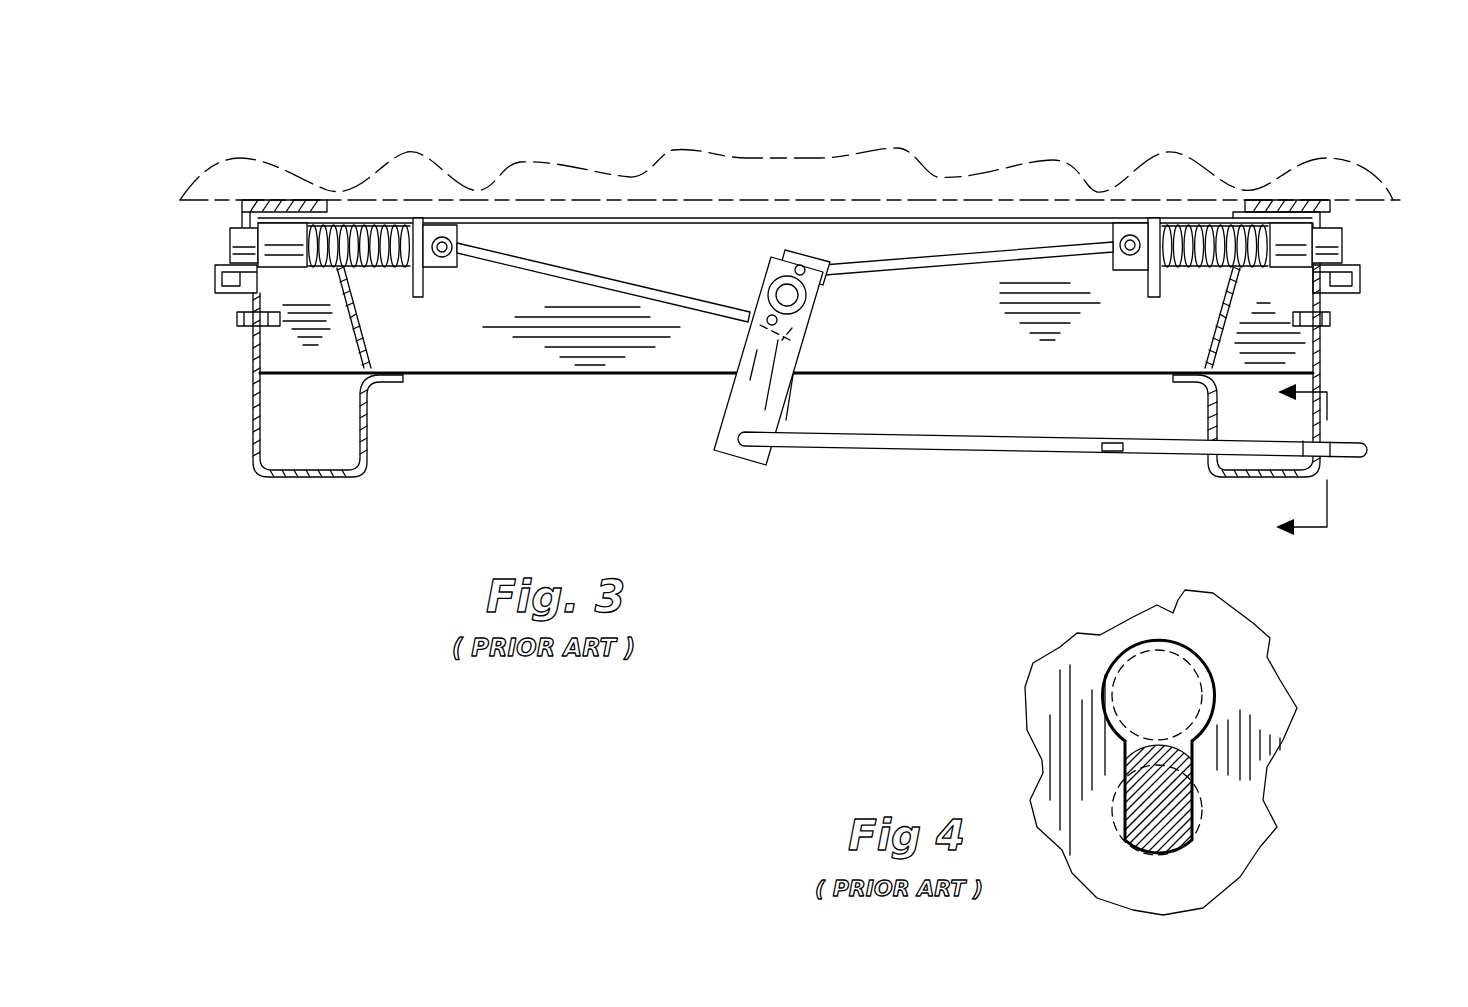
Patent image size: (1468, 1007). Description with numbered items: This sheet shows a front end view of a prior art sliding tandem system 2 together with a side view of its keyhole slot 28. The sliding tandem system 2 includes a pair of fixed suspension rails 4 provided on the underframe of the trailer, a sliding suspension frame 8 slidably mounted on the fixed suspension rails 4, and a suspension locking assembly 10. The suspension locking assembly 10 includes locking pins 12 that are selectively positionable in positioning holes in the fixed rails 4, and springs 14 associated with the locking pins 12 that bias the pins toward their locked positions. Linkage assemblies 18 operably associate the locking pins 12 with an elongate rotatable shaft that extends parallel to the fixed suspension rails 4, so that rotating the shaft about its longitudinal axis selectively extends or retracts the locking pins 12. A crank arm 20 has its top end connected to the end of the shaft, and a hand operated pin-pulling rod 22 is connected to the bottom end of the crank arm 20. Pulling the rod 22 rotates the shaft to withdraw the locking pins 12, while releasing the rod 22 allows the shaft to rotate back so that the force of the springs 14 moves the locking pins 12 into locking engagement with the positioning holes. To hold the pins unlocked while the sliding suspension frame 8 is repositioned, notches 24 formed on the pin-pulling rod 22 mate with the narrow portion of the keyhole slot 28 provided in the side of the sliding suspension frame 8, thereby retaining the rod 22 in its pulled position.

In FIG. 3, the sliding tandem system 2 is at (983, 157).
In FIG. 3, the fixed suspension rails 4 is at (287, 200).
In FIG. 3, the sliding suspension frame 8 is at (603, 352).
In FIG. 3, the suspension locking assembly 10 is at (713, 466).
In FIG. 3, the locking pins 12 is at (237, 240).
In FIG. 3, the springs 14 is at (380, 268).
In FIG. 3, the linkage assemblies 18 is at (673, 293).
In FIG. 3, the crank arm 20 is at (747, 403).
In FIG. 3, the pin-pulling rod 22 is at (935, 448).
In FIG. 4, the pin-pulling rod 22 is at (1167, 813).
In FIG. 3, the notches 24 is at (1100, 455).
In FIG. 4, the keyhole slot 28 is at (1197, 686).